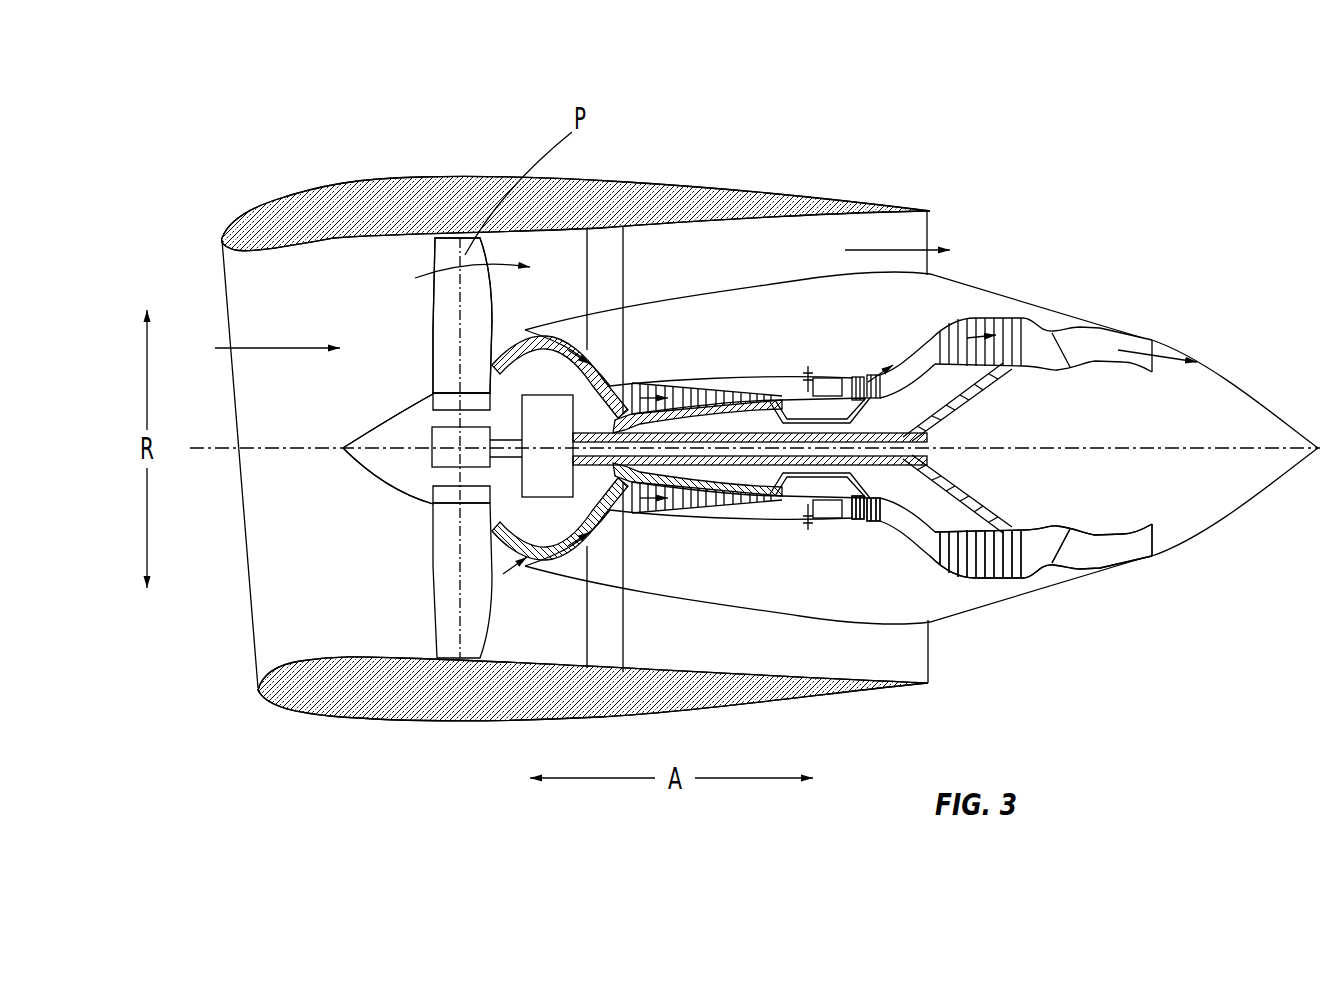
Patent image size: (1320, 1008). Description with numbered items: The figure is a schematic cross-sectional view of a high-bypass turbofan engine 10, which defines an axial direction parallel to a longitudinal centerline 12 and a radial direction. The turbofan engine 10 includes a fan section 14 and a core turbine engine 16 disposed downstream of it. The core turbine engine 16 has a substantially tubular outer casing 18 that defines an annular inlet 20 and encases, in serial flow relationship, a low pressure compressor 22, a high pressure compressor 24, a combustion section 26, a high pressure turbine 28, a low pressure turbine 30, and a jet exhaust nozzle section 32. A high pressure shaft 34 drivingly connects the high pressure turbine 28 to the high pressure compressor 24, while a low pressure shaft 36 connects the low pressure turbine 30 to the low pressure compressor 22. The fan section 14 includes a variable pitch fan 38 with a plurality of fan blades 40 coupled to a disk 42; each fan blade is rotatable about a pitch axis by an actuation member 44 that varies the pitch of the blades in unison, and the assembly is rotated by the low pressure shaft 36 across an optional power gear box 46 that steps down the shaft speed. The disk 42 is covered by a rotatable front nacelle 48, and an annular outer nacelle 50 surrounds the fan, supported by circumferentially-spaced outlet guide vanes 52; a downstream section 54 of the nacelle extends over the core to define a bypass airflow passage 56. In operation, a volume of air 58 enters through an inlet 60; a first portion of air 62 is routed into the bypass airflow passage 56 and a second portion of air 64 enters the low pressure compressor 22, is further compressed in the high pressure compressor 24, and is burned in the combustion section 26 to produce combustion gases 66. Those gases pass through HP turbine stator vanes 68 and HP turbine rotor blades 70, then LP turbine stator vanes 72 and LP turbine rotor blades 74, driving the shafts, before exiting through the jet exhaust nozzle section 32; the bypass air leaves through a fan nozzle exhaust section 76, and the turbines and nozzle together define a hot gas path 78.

The turbofan engine 10 is at (1072, 183).
The longitudinal centerline 12 is at (1090, 440).
The fan section 14 is at (393, 268).
The core turbine engine 16 is at (745, 330).
The outer casing 18 is at (783, 609).
The annular inlet 20 is at (527, 557).
The low pressure compressor 22 is at (592, 510).
The high pressure compressor 24 is at (653, 508).
The combustion section 26 is at (825, 516).
The high pressure turbine 28 is at (893, 520).
The low pressure turbine 30 is at (1010, 581).
The jet exhaust nozzle section 32 is at (1070, 564).
The high pressure shaft 34 is at (870, 415).
The low pressure shaft 36 is at (952, 413).
The variable pitch fan 38 is at (402, 500).
The fan blades 40 is at (434, 597).
The disk 42 is at (450, 400).
The actuation member 44 is at (430, 432).
The power gear box 46 is at (608, 385).
The front nacelle 48 is at (357, 465).
The outer nacelle 50 is at (480, 722).
The outlet guide vanes 52 is at (630, 258).
The downstream section 54 is at (866, 205).
The bypass airflow passage 56 is at (800, 265).
The volume of air 58 is at (277, 346).
The inlet 60 is at (255, 660).
The first portion of air 62 is at (436, 300).
The second portion of air 64 is at (522, 346).
The combustion gases 66 is at (867, 372).
The HP turbine stator vanes 68 is at (851, 519).
The HP turbine rotor blades 70 is at (897, 482).
The LP turbine stator vanes 72 is at (932, 558).
The LP turbine rotor blades 74 is at (947, 566).
The fan nozzle exhaust section 76 is at (917, 232).
The hot gas path 78 is at (904, 350).